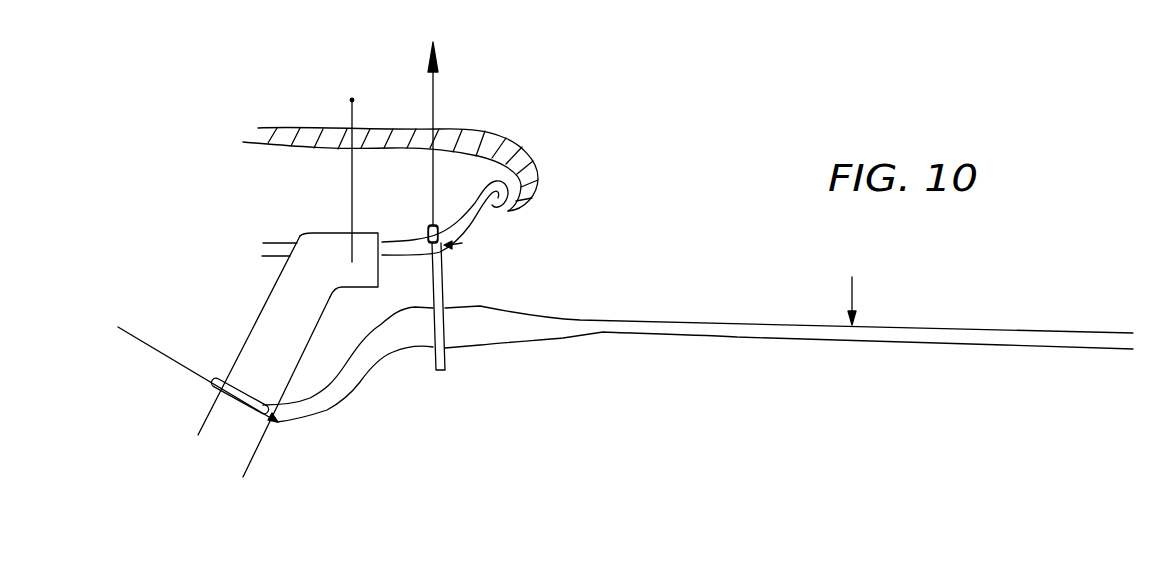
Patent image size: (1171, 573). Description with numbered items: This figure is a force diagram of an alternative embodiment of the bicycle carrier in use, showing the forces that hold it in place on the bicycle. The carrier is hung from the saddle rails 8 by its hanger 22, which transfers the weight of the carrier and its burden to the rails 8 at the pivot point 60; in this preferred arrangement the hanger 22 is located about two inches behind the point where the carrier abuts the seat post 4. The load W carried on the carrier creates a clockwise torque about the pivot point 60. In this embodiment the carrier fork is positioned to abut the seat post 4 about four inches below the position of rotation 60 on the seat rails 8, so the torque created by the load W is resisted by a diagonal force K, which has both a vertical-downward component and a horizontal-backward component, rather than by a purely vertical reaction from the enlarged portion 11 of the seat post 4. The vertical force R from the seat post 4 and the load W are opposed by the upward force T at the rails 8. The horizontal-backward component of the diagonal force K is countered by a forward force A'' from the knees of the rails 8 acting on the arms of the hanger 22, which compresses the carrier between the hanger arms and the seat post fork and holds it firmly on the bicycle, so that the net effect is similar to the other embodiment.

The seat post 4 is at (263, 303).
The saddle rails 8 is at (477, 213).
The enlarged portion of seat post 11 is at (380, 275).
The hanger 22 is at (443, 283).
The pivot point 60 is at (427, 232).
The upward force T is at (438, 112).
The vertical downward force R is at (350, 161).
The diagonal force K is at (182, 364).
The load W is at (698, 334).
The forward force A'' is at (463, 235).